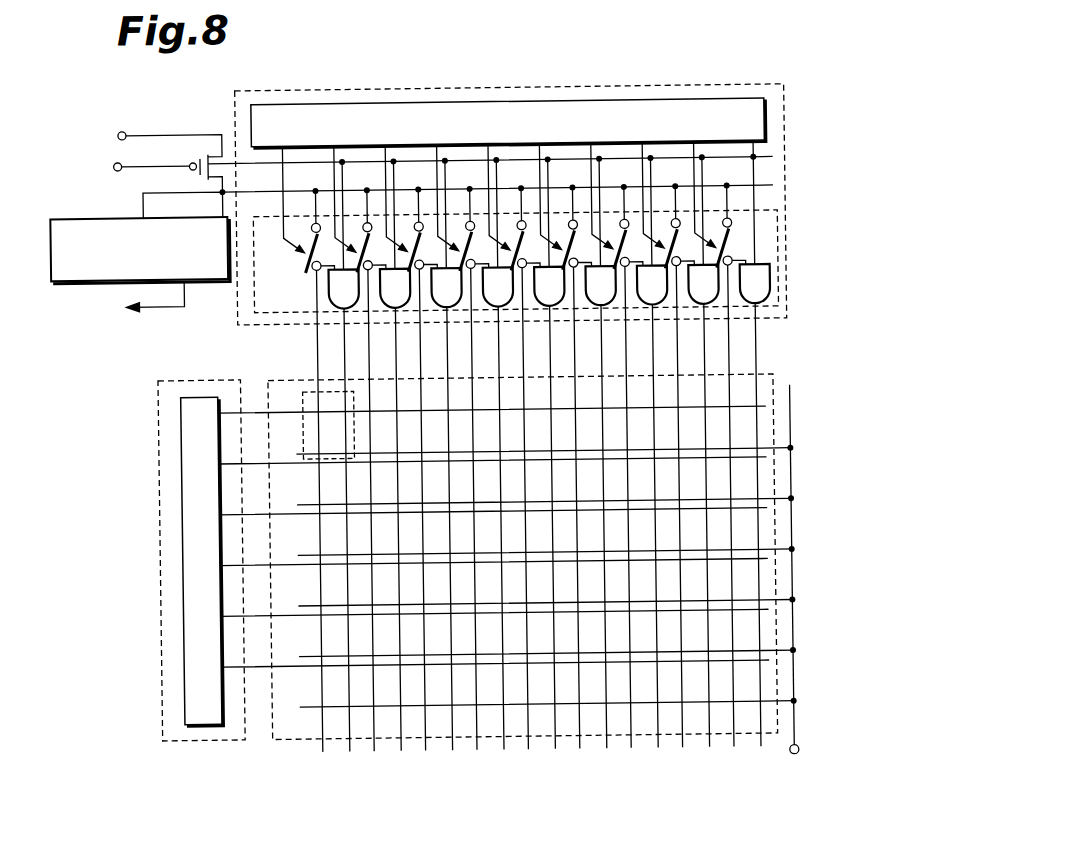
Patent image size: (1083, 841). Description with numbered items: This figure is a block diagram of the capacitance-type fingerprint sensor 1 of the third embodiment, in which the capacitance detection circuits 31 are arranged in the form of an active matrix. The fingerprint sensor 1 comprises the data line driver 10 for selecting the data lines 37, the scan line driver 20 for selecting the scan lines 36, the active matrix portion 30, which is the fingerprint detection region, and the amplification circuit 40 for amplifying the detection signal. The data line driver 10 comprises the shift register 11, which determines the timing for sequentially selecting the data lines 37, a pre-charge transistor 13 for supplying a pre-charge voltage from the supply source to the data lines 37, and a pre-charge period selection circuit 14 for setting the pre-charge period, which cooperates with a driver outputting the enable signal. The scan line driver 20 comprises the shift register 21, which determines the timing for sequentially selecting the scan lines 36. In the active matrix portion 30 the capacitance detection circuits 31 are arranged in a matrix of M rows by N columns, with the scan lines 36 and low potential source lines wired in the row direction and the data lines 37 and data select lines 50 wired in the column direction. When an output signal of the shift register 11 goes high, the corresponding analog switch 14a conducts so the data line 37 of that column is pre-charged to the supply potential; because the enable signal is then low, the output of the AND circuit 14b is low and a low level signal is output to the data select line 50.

The capacitance-type fingerprint sensor 1 is at (790, 110).
The data line driver 10 is at (375, 86).
The shift register 11 is at (708, 101).
The pre-charge transistor 13 is at (212, 155).
The pre-charge period selection circuit 14 is at (794, 303).
The analog switch 14a is at (728, 240).
The AND circuit 14b is at (762, 285).
The scan line driver 20 is at (158, 663).
The shift register 21 is at (184, 697).
The active matrix portion 30 is at (362, 737).
The capacitance detection circuit 31 is at (311, 388).
The scan line 36 is at (255, 409).
The data line 37 is at (322, 744).
The amplification circuit 40 is at (113, 213).
The data select line 50 is at (346, 717).